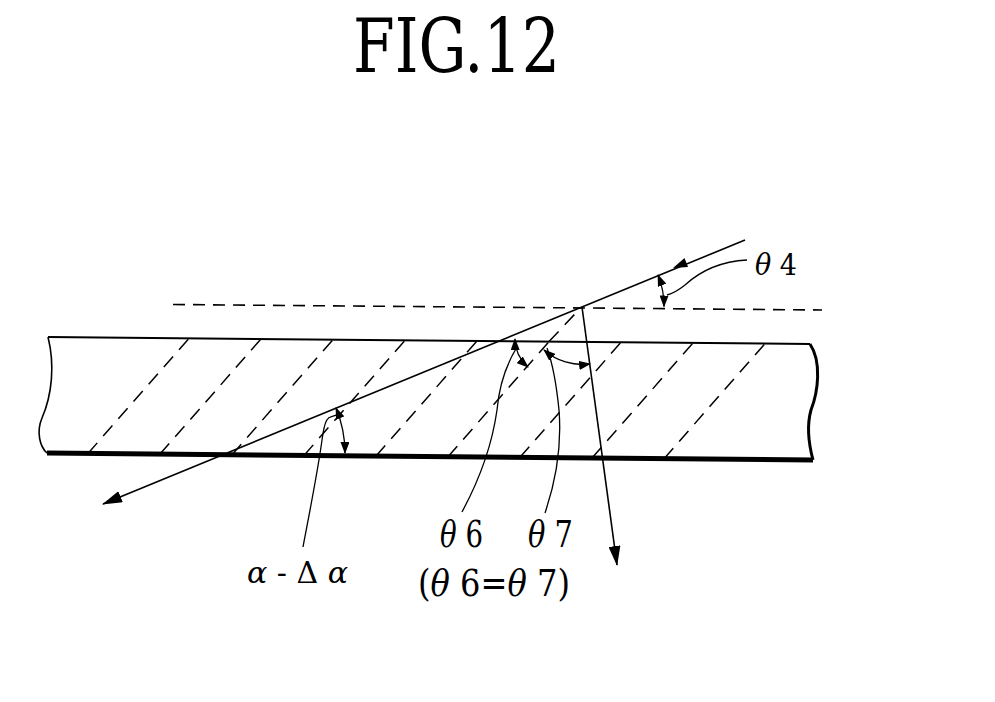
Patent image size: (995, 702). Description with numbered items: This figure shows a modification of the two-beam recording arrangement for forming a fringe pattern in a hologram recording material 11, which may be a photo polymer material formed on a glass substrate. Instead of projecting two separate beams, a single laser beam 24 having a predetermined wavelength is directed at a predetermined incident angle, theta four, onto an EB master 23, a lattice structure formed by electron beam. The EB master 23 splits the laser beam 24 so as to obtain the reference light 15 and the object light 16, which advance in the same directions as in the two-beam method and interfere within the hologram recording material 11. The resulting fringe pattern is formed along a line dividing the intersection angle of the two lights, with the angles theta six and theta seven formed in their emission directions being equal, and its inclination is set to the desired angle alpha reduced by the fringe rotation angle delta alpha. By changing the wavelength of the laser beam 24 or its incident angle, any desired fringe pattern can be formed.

The hologram recording material 11 is at (760, 437).
The reference light 15 is at (528, 341).
The object light 16 is at (608, 500).
The EB master 23 is at (807, 308).
The laser beam 24 is at (712, 250).